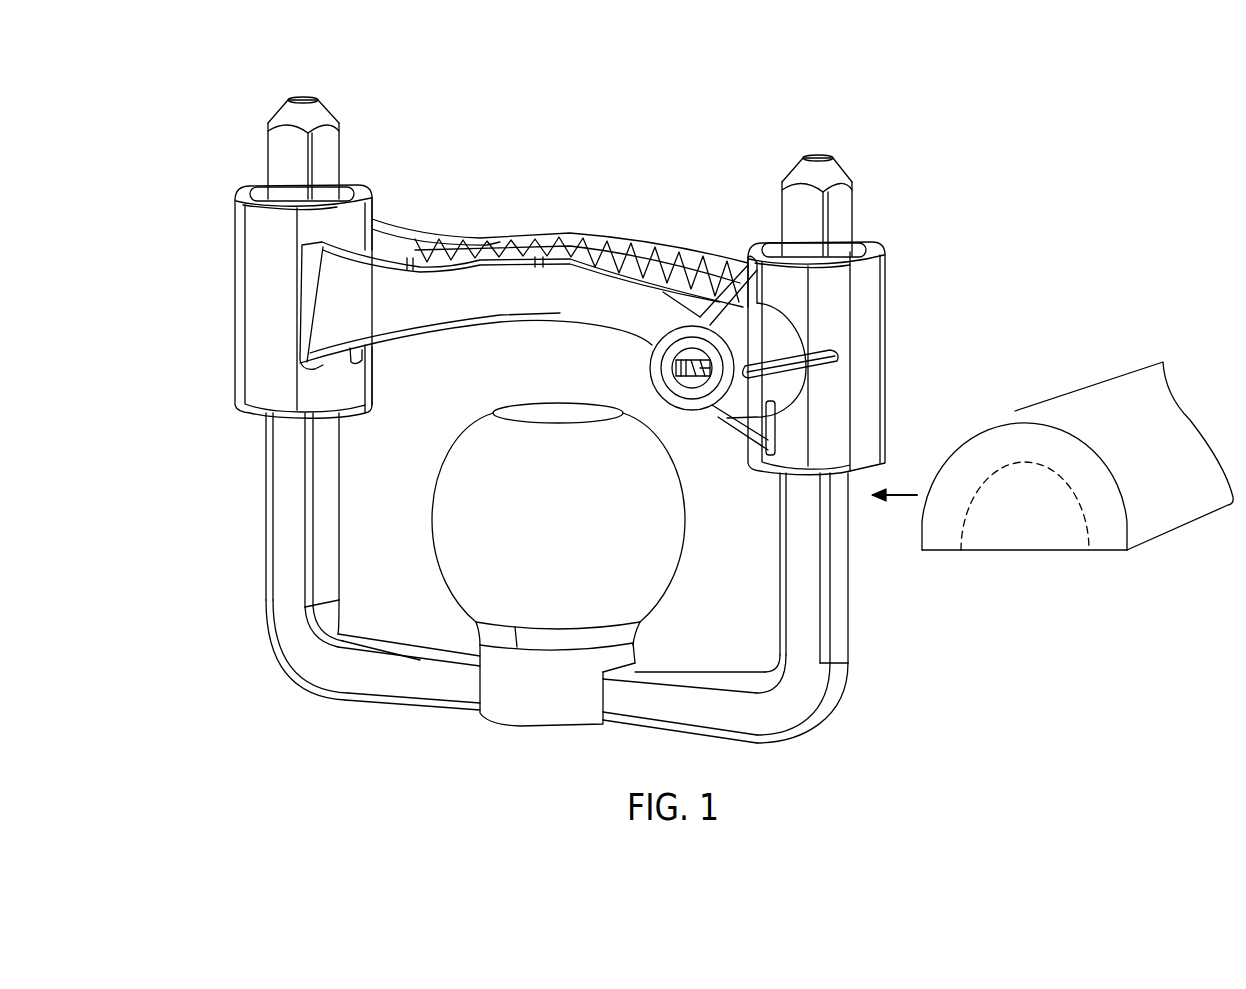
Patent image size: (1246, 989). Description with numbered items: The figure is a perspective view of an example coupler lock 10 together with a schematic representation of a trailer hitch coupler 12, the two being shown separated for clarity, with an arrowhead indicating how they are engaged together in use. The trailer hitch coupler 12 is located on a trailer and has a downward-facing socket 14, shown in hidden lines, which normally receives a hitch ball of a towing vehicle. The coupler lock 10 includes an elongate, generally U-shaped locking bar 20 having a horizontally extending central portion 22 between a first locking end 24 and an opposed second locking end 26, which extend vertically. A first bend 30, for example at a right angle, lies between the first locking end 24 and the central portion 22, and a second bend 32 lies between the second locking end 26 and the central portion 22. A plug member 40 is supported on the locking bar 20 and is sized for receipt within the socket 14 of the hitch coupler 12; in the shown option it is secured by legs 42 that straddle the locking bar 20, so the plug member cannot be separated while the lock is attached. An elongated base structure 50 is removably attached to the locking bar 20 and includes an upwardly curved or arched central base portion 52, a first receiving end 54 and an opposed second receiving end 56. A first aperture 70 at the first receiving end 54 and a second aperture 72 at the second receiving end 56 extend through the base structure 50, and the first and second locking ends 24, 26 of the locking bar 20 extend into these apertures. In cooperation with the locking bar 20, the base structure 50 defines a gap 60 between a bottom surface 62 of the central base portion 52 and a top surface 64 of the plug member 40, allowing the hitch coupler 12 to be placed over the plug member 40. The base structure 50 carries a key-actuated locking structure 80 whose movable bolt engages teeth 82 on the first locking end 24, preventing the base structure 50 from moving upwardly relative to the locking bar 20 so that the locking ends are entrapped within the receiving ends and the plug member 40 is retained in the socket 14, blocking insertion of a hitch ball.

The coupler lock 10 is at (122, 94).
The trailer hitch coupler 12 is at (1031, 547).
The socket 14 is at (1021, 464).
The locking bar 20 is at (258, 540).
The central portion 22 is at (395, 708).
The first locking end 24 is at (855, 203).
The second locking end 26 is at (314, 113).
The first bend 30 is at (803, 723).
The second bend 32 is at (285, 670).
The plug member 40 is at (465, 404).
The legs 42 is at (560, 714).
The base structure 50 is at (228, 300).
The central base portion 52 is at (567, 232).
The first receiving end 54 is at (880, 330).
The second receiving end 56 is at (235, 345).
The gap 60 is at (549, 381).
The bottom surface 62 is at (494, 326).
The top surface 64 is at (568, 403).
The first aperture 70 is at (862, 246).
The second aperture 72 is at (265, 190).
The locking structure 80 is at (690, 327).
The teeth 82 is at (790, 236).